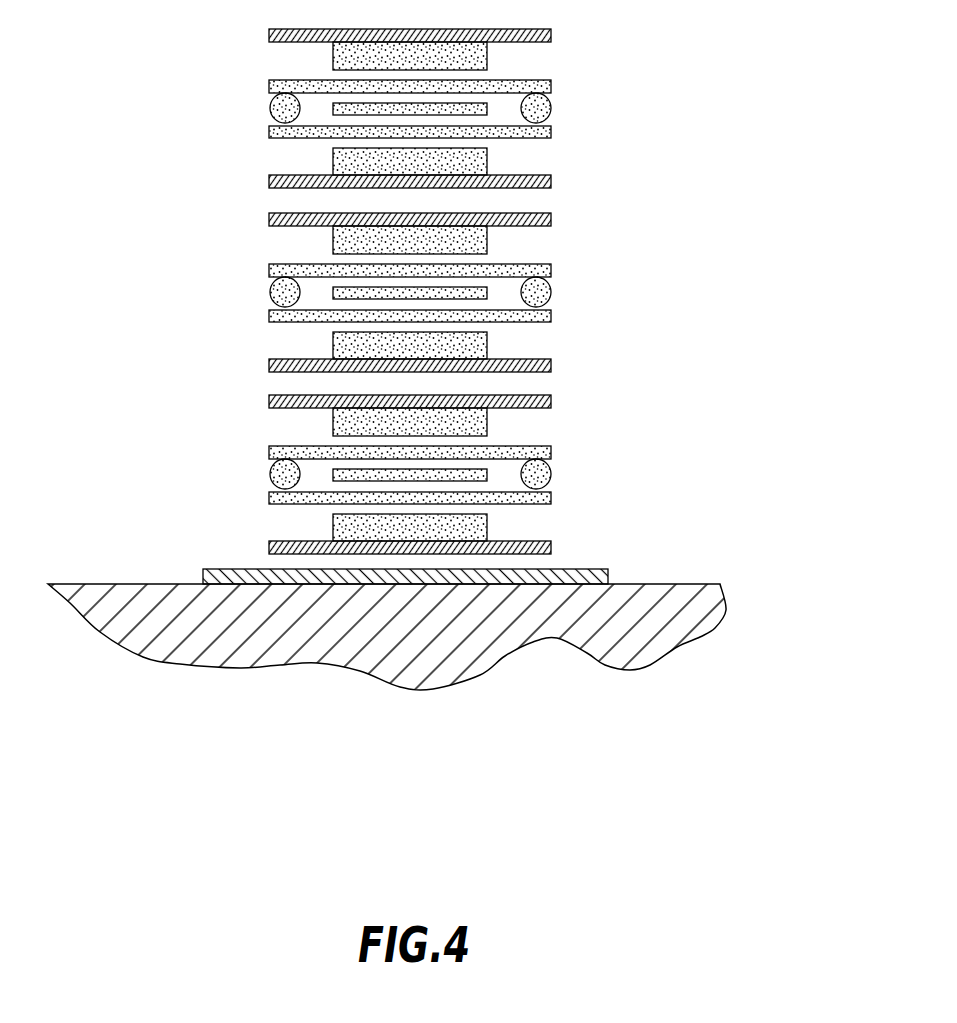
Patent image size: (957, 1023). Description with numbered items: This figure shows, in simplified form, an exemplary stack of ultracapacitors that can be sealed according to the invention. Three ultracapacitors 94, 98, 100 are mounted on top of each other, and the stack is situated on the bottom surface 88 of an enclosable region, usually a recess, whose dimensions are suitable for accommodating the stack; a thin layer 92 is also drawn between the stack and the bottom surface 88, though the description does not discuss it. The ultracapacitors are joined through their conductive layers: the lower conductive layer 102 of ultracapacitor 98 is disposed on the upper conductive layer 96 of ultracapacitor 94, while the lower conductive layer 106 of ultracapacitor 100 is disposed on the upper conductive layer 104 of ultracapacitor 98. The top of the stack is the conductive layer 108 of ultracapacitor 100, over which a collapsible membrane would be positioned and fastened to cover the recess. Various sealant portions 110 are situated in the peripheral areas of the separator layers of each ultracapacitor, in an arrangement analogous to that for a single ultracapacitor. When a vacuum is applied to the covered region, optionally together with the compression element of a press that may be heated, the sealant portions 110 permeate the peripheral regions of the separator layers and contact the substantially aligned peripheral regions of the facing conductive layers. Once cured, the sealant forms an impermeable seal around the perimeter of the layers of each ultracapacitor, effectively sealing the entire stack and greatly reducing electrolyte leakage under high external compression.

The bottom surface 88 is at (696, 568).
The bonding layer 92 is at (608, 569).
The ultracapacitor 94 is at (202, 479).
The upper conductive layer 96 is at (551, 396).
The ultracapacitor 98 is at (202, 296).
The ultracapacitor 100 is at (202, 110).
The lower conductive layer 102 is at (551, 359).
The upper conductive layer 104 is at (551, 213).
The lower conductive layer 106 is at (551, 175).
The conductive layer 108 is at (551, 29).
The sealant portions 110 is at (549, 108).